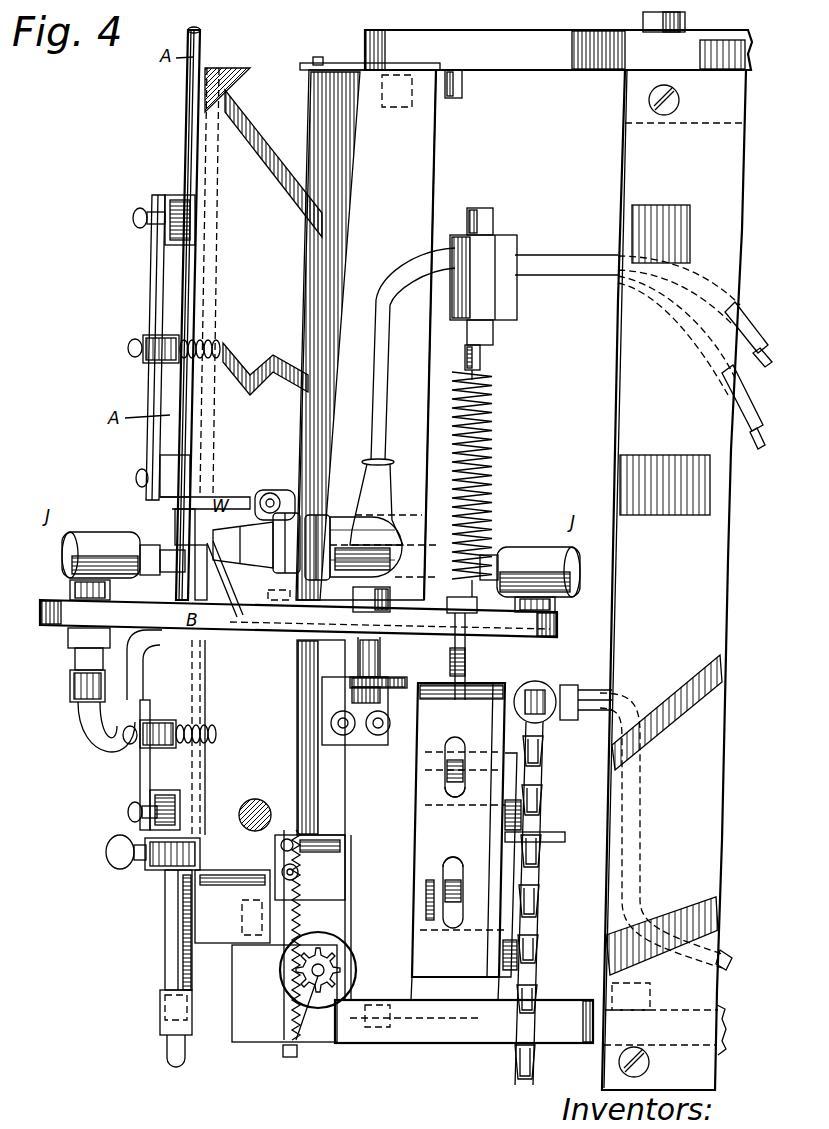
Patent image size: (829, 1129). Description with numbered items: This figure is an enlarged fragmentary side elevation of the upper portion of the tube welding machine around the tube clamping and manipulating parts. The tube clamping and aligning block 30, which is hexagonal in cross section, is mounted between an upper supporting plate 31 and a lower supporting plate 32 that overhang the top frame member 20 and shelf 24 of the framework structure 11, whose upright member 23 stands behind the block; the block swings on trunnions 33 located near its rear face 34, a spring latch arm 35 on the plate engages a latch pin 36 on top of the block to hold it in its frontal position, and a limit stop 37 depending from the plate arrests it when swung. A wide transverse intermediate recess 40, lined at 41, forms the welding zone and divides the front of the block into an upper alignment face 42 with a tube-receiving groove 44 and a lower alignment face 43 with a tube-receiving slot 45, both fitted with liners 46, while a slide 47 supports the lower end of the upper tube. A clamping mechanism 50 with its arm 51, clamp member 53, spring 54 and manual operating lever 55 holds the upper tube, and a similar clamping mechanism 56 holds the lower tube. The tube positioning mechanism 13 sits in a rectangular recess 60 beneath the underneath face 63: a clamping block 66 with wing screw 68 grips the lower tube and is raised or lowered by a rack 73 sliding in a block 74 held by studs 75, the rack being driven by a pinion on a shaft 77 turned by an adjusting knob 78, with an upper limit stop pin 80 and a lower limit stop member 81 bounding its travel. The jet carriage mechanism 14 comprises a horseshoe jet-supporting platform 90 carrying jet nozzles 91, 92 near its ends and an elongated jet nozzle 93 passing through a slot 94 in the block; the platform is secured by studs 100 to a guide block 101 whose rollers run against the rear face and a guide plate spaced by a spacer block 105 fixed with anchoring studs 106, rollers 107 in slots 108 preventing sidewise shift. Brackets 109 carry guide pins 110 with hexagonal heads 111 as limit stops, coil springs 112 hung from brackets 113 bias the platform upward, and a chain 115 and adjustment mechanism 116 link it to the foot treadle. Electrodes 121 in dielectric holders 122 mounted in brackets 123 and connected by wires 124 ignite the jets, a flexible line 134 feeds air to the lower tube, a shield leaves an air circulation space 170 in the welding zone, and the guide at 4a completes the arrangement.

The guide slot 4a is at (213, 298).
The framework structure 11 is at (620, 215).
The tube positioning mechanism 13 is at (156, 942).
The jet carriage mechanism 14 is at (56, 630).
The top frame member 20 is at (624, 123).
The frame member 23 is at (640, 167).
The shelf 24 is at (730, 1055).
The tube clamping and aligning block 30 is at (392, 194).
The supporting plate 31 is at (523, 36).
The supporting plate 32 is at (492, 1043).
The trunnions 33 is at (382, 95).
The rear face 34 is at (436, 162).
The spring latch arm 35 is at (340, 63).
The latch pin 36 is at (318, 58).
The limit stop 37 is at (462, 90).
The intermediate recess 40 is at (152, 521).
The lining 41 is at (280, 600).
The upper alignment face 42 is at (190, 137).
The lower alignment face 43 is at (208, 752).
The tube-receiving groove 44 is at (217, 70).
The tube-receiving slot 45 is at (211, 447).
The liners 46 is at (195, 100).
The slide 47 is at (224, 600).
The clamping mechanism 50 is at (150, 262).
The lower bracket arm 51 is at (140, 770).
The clamp screw 53 is at (185, 197).
The spring 54 is at (222, 346).
The manual operating lever 55 is at (160, 366).
The clamping mechanism 56 is at (130, 791).
The rectangular recess 60 is at (311, 867).
The underneath face 63 is at (346, 846).
The clamping block 66 is at (220, 945).
The wing screw 68 is at (115, 870).
The rack 73 is at (292, 1058).
The block 74 is at (252, 1044).
The studs 75 is at (266, 796).
The shaft 77 is at (336, 952).
The adjusting knob 78 is at (320, 1003).
The upper limit stop pin 80 is at (300, 838).
The lower limit stop member 81 is at (303, 906).
The jet-supporting platform 90 is at (50, 620).
The jet nozzle 91 is at (238, 520).
The jet nozzle 92 is at (165, 560).
The jet nozzle 93 is at (500, 557).
The slot 94 is at (407, 515).
The studs 100 is at (447, 605).
The guide block 101 is at (432, 722).
The spacer block 105 is at (535, 838).
The anchoring studs 106 is at (444, 862).
The rollers 107 is at (445, 770).
The slots 108 is at (446, 792).
The brackets 109 is at (402, 675).
The guide pins 110 is at (358, 683).
The hexagonal heads 111 is at (353, 603).
The coil springs 112 is at (494, 396).
The brackets 113 is at (500, 312).
The chain 115 is at (546, 780).
The adjustment mechanism 116 is at (560, 690).
The electrodes 121 is at (240, 596).
The dielectric holders 122 is at (368, 497).
The brackets 123 is at (275, 492).
The wires 124 is at (378, 340).
The flexible line 134 is at (175, 1066).
The air circulation space 170 is at (229, 497).